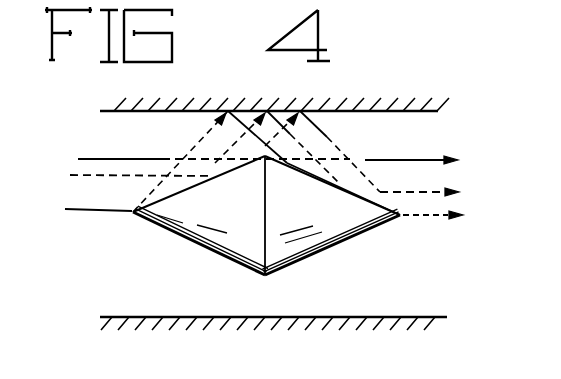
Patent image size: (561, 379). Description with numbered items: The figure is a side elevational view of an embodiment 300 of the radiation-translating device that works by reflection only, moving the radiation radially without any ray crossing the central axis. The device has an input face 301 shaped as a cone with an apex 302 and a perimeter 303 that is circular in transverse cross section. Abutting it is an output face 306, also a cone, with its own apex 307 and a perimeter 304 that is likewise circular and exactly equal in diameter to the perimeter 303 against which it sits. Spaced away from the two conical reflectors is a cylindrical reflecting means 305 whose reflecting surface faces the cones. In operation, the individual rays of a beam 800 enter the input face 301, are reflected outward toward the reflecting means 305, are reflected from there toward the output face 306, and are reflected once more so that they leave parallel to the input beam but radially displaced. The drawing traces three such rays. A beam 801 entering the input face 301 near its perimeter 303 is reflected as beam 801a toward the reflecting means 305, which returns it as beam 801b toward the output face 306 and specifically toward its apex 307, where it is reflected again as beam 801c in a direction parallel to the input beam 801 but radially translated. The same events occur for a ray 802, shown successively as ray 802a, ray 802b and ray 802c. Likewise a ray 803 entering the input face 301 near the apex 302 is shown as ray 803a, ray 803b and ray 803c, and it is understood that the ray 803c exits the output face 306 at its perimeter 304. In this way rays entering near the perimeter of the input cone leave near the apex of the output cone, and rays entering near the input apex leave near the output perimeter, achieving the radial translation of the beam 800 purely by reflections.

The embodiment 300 is at (378, 74).
The input face 301 is at (181, 241).
The apex 302 is at (133, 218).
The perimeter 303 is at (260, 277).
The perimeter 304 is at (271, 278).
The cylindrical reflecting means 305 is at (284, 318).
The output face 306 is at (324, 266).
The apex 307 is at (404, 218).
The beam 800 is at (193, 160).
The beam 801 is at (82, 158).
The reflected beam 801a is at (290, 165).
The reflected beam 801b is at (318, 124).
The reflected beam 801c is at (422, 216).
The ray 802 is at (98, 178).
The reflected ray 802a is at (256, 125).
The reflected ray 802b is at (318, 149).
The reflected ray 802c is at (428, 188).
The ray 803 is at (100, 214).
The reflected ray 803a is at (215, 133).
The reflected ray 803b is at (246, 178).
The reflected ray 803c is at (424, 160).